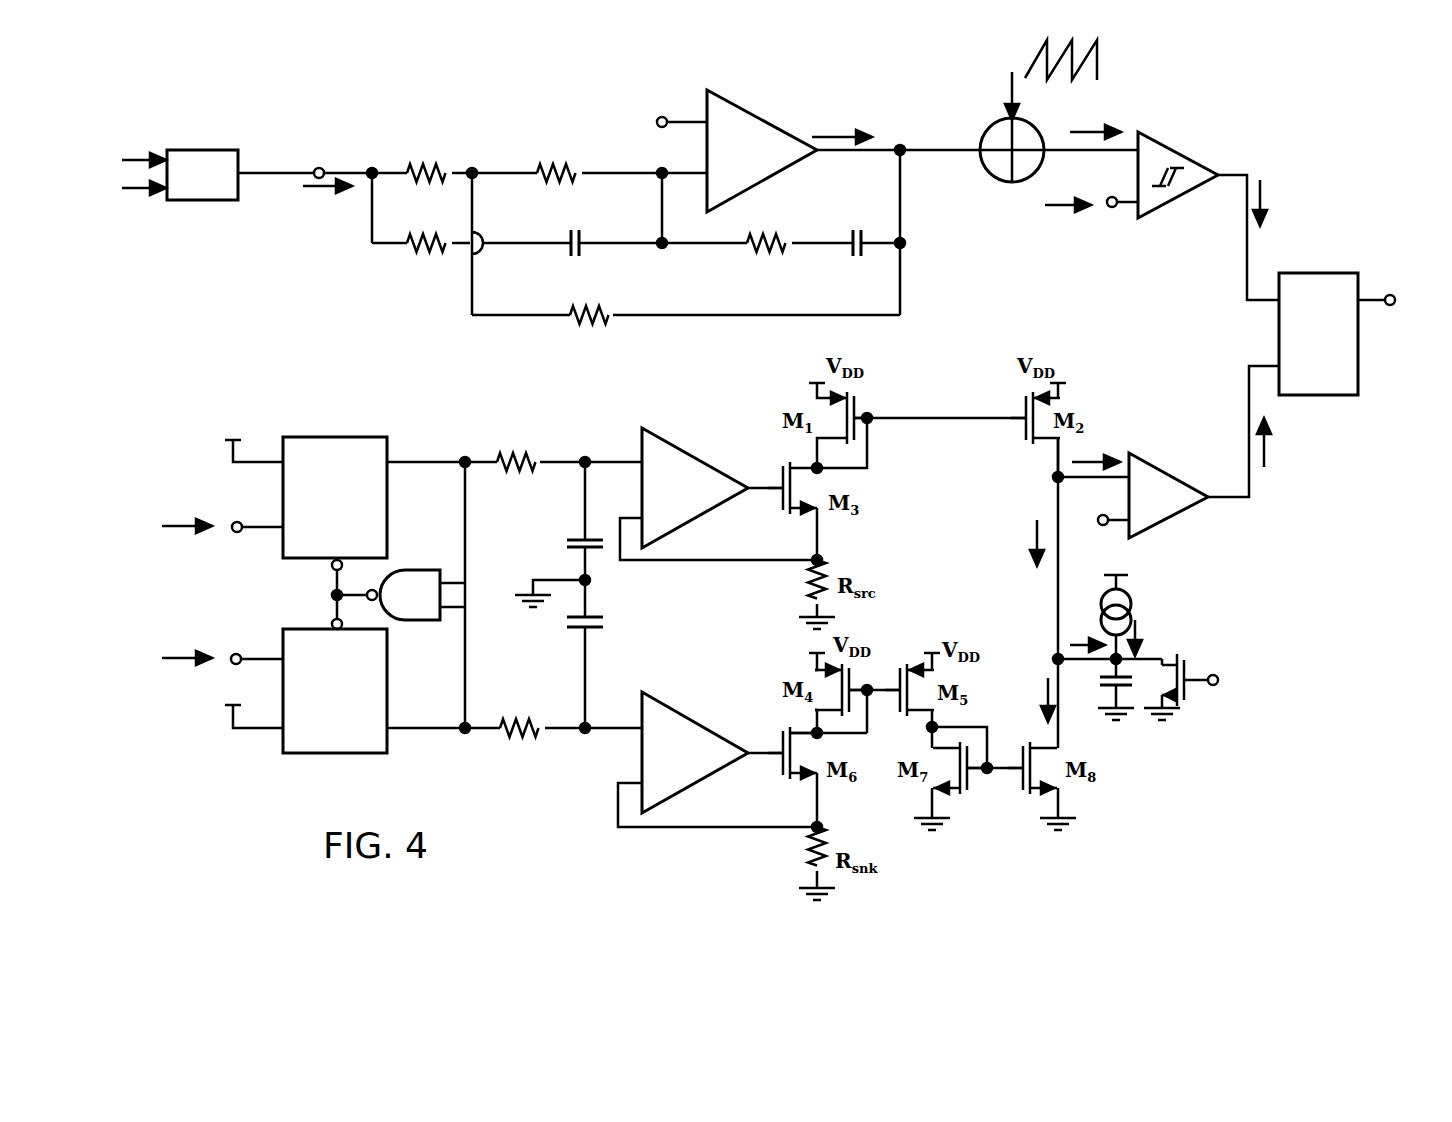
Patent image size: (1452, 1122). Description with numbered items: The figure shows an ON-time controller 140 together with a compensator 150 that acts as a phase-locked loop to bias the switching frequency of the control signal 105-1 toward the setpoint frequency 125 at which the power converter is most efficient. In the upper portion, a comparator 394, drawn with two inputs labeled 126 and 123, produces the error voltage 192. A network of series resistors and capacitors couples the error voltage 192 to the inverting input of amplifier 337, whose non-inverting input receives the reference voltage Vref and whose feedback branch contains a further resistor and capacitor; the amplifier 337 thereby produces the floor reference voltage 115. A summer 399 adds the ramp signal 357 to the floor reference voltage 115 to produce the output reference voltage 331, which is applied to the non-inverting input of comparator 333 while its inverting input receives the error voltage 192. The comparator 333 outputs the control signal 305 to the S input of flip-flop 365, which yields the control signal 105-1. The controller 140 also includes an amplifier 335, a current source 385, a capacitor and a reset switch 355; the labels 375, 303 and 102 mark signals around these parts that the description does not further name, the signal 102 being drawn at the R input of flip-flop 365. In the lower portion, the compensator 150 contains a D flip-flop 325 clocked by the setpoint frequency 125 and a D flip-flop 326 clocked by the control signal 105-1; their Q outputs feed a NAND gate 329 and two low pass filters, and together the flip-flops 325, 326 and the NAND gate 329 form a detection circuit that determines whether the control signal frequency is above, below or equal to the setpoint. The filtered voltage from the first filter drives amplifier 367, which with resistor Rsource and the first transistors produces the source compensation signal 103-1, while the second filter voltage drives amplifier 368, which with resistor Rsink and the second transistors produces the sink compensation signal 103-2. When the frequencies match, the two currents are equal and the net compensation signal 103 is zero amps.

The first input signal 126 is at (128, 150).
The second input signal 123 is at (128, 203).
The comparator 394 is at (202, 175).
The error voltage 192 is at (325, 196).
The controller 140 is at (420, 287).
The compensator 150 is at (397, 391).
The floor reference voltage 115 is at (829, 128).
The amplifier 337 is at (730, 150).
The summer 399 is at (985, 122).
The ramp signal 357 is at (1003, 84).
The output reference voltage 331 is at (1088, 120).
The comparator 333 is at (1193, 127).
The control signal 305 is at (1270, 193).
The flip-flop 365 is at (1318, 334).
The control signal 105-1 is at (1378, 308).
The reset signal 102 is at (1272, 452).
The sensed voltage signal 375 is at (1090, 450).
The amplifier 335 is at (1150, 495).
The compensation signal 103-1 is at (1028, 537).
The compensation signal 103 is at (1080, 640).
The compensation signal 103-2 is at (1037, 688).
The current source 385 is at (1138, 614).
The input current 303 is at (1148, 632).
The reset switch 355 is at (1192, 697).
The setpoint frequency 125 is at (166, 528).
The D flip-flop 325 is at (297, 482).
The D flip-flop 326 is at (298, 691).
The NAND gate 329 is at (398, 594).
The amplifier 367 is at (718, 494).
The amplifier 368 is at (717, 759).